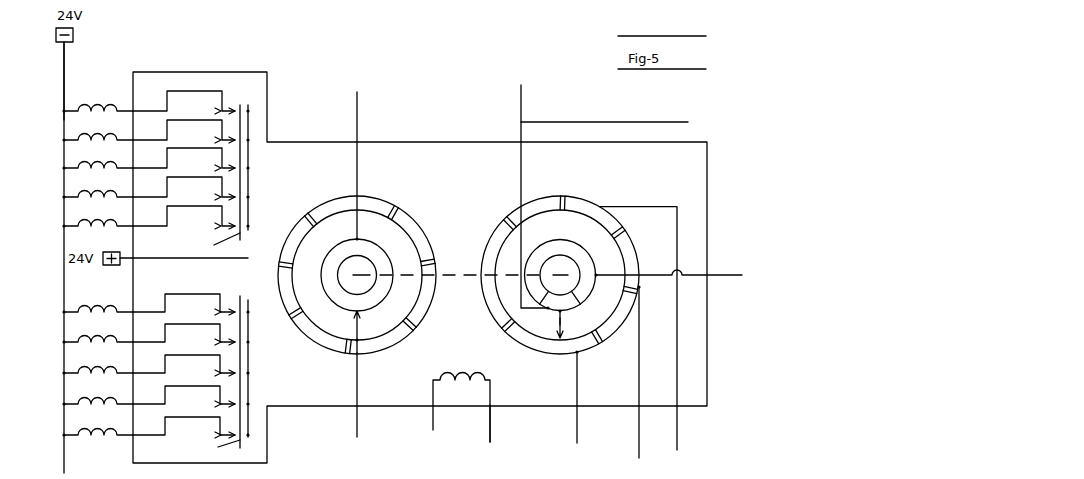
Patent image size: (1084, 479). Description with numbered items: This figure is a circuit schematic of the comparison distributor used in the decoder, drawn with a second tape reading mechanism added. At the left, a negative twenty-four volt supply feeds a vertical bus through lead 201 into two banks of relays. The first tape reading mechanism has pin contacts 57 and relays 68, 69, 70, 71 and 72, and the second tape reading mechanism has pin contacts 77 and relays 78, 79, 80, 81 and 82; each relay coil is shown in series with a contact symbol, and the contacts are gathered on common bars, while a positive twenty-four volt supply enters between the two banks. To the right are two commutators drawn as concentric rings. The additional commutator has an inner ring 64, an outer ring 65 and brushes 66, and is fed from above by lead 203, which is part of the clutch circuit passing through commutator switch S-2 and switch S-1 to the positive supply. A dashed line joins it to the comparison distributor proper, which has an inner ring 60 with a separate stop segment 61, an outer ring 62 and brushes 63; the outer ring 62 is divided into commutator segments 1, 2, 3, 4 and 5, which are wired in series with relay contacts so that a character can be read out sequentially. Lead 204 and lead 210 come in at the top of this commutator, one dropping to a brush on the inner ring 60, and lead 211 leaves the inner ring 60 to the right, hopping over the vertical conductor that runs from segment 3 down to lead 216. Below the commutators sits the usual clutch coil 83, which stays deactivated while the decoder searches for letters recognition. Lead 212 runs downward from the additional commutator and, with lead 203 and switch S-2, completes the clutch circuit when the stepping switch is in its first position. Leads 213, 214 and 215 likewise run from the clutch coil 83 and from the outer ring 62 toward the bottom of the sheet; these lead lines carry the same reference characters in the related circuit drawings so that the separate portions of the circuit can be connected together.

The negative supply conductor 201 is at (66, 78).
The relay 68 is at (103, 96).
The relay 69 is at (103, 125).
The relay 70 is at (103, 153).
The relay 71 is at (103, 182).
The relay 72 is at (103, 211).
The pin contacts 57 is at (240, 105).
The pin contacts 77 is at (238, 296).
The relay 78 is at (97, 307).
The relay 79 is at (97, 337).
The relay 80 is at (97, 368).
The relay 81 is at (97, 399).
The relay 82 is at (97, 430).
The lead 203 is at (357, 115).
The lead 204 is at (525, 99).
The conductor 210 is at (617, 122).
The outer ring 65 is at (407, 213).
The inner ring 64 is at (374, 246).
The brushes 66 is at (360, 320).
The outer ring 62 is at (583, 200).
The inner ring 60 is at (569, 242).
The stop segment 61 is at (571, 308).
The brushes 63 is at (560, 322).
The commutator segment 1 is at (495, 238).
The commutator segment 2 is at (540, 207).
The commutator segment 3 is at (593, 213).
The commutator segment 4 is at (630, 257).
The commutator segment 5 is at (617, 317).
The output conductor 211 is at (722, 275).
The clutch coil 83 is at (462, 372).
The lead 212 is at (351, 426).
The lead 213 is at (492, 429).
The lead 214 is at (580, 423).
The lead 215 is at (641, 428).
The lead 216 is at (682, 430).